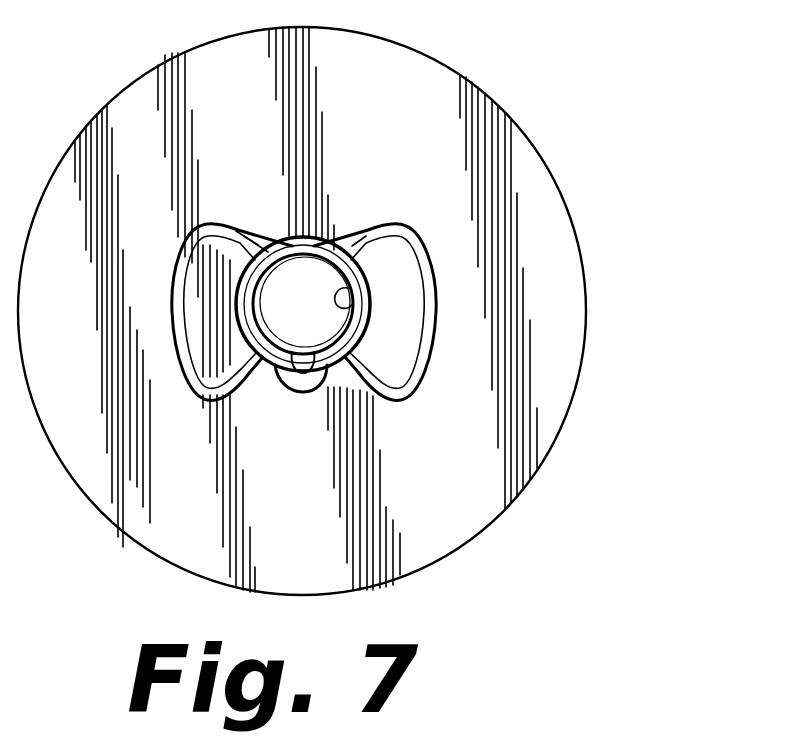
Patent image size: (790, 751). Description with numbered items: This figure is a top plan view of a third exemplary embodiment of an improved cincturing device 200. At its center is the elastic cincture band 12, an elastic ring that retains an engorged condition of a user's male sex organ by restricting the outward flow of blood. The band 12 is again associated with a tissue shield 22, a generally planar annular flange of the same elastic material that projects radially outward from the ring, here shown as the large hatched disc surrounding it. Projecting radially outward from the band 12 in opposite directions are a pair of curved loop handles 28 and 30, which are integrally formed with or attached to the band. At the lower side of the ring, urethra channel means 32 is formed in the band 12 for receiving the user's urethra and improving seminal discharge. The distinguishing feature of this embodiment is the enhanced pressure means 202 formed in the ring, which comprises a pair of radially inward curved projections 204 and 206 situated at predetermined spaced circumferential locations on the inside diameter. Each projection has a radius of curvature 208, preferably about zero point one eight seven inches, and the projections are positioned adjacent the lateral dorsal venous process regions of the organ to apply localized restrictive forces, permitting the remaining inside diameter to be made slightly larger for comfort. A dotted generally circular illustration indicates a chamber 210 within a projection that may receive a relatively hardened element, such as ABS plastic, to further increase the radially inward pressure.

The improved cincturing device 200 is at (505, 70).
The tissue shield 22 is at (410, 145).
The radius of curvature 208 is at (254, 252).
The radially inward curved projection 204 is at (260, 246).
The chamber 210 is at (358, 254).
The curved loop handle 28 is at (430, 250).
The curved loop handle 30 is at (176, 280).
The radially inward curved projection 206 is at (347, 304).
The enhanced pressure means 202 is at (329, 290).
The elastic cincture band 12 is at (275, 372).
The urethra channel means 32 is at (304, 401).